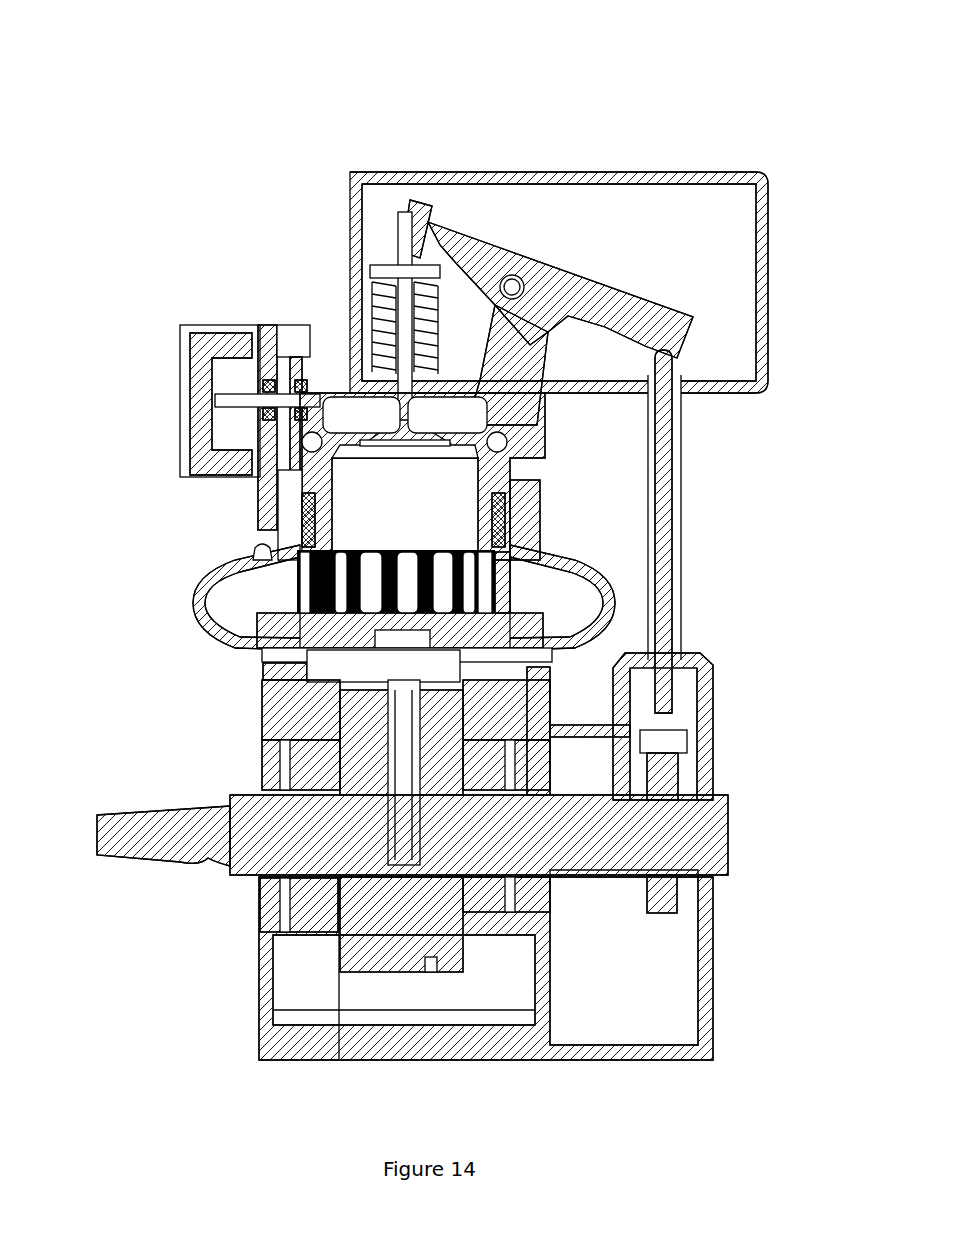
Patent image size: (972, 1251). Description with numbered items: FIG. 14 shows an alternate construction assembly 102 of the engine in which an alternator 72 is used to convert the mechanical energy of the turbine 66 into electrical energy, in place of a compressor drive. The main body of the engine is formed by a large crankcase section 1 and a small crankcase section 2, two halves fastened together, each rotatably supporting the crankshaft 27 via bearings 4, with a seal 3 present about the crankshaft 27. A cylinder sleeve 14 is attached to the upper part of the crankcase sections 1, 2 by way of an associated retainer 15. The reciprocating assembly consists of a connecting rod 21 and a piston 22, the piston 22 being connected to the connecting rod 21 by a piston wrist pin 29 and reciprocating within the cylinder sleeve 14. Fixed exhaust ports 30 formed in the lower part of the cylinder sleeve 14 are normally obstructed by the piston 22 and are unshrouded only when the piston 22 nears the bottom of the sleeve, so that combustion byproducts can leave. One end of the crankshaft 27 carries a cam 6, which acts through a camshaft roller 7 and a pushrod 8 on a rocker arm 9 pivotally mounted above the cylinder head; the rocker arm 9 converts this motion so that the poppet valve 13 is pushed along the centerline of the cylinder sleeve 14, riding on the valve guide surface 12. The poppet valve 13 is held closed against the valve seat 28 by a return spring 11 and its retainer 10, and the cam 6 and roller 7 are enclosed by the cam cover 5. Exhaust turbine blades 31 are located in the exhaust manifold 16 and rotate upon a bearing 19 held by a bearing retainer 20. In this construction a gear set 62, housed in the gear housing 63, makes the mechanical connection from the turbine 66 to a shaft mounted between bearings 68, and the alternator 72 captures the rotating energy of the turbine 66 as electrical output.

The large crankcase section 1 is at (500, 1052).
The small crankcase section 2 is at (283, 1045).
The seal 3 is at (272, 915).
The bearings 4 is at (312, 920).
The cam cover 5 is at (705, 990).
The cam 6 is at (662, 898).
The camshaft roller 7 is at (662, 738).
The pushrod 8 is at (660, 682).
The rocker arm 9 is at (655, 322).
The retainer 10 is at (383, 268).
The return spring 11 is at (437, 270).
The valve guide surface 12 is at (427, 327).
The poppet valve 13 is at (405, 357).
The cylinder sleeve 14 is at (325, 652).
The retainer 15 is at (285, 672).
The exhaust manifold 16 is at (190, 602).
The bearing 19 is at (543, 525).
The bearing retainer 20 is at (540, 498).
The connecting rod 21 is at (403, 779).
The piston 22 is at (460, 632).
The crankshaft 27 is at (170, 840).
The valve seat 28 is at (448, 440).
The piston wrist pin 29 is at (370, 668).
The exhaust ports 30 is at (485, 583).
The exhaust turbine blades 31 is at (504, 596).
The gear set 62 is at (283, 372).
The gear housing 63 is at (300, 350).
The turbine 66 is at (262, 547).
The bearings 68 is at (268, 385).
The alternator 72 is at (186, 344).
The alternate construction assembly 102 is at (146, 112).